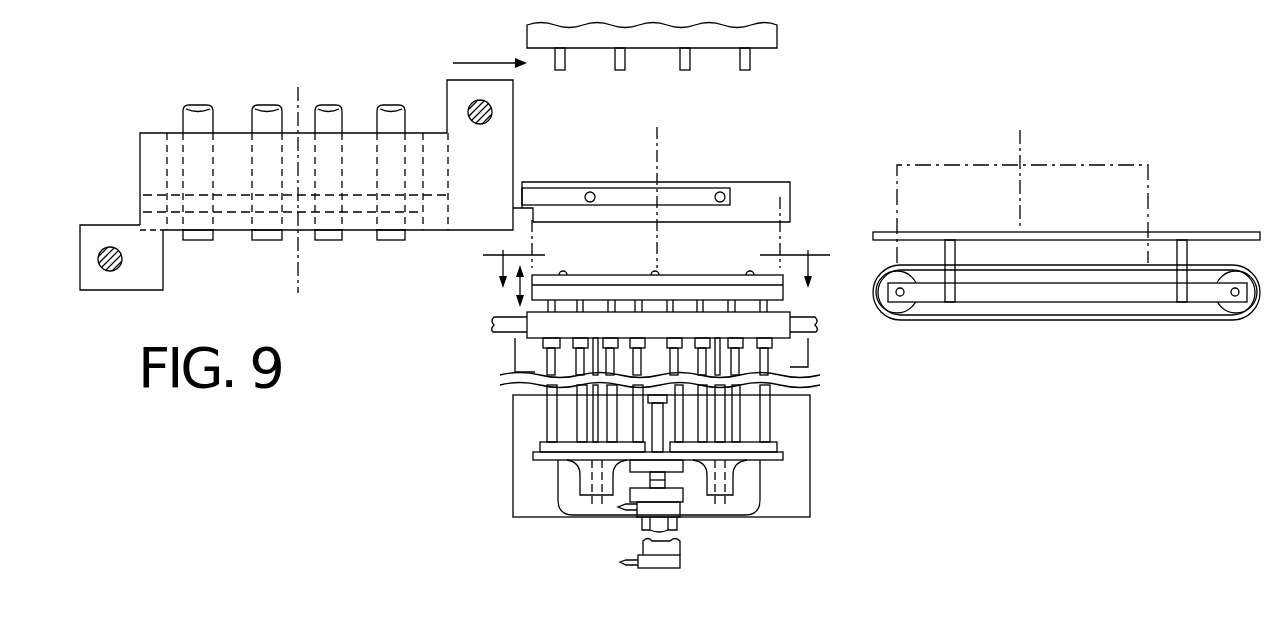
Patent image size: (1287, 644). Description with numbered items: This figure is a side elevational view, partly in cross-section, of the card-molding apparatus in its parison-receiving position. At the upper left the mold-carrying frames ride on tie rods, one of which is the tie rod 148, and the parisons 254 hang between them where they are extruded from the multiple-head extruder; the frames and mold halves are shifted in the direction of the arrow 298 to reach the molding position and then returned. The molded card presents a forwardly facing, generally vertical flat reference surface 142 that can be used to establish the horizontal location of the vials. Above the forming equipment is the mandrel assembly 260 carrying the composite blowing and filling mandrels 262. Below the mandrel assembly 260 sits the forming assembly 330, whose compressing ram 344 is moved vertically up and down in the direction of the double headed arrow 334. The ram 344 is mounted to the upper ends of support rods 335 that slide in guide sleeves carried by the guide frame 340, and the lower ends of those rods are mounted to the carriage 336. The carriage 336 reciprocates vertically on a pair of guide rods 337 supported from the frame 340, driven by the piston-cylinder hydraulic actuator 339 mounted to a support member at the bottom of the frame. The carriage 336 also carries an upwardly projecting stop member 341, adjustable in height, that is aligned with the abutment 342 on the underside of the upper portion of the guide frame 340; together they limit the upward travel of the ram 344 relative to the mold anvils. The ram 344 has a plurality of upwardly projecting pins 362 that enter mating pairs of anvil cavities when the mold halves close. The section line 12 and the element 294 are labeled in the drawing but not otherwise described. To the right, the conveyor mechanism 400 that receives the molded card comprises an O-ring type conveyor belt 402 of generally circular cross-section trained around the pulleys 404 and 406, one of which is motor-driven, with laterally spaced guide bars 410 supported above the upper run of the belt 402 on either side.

The section line 12- 12 is at (654, 207).
The reference surface 142 is at (98, 258).
The tie rod 148 is at (468, 108).
The parison 254 is at (382, 107).
The mandrel assembly 260 is at (791, 28).
The composite blowing and filling mandrel 262 is at (732, 98).
The transfer arm 294 is at (757, 200).
The arrow 298 is at (488, 63).
The forming assembly 330 is at (805, 345).
The double headed arrow 334 is at (516, 290).
The support rod 335 is at (600, 378).
The carriage 336 is at (512, 457).
The guide rod 337 is at (715, 417).
The hydraulic actuator 339 is at (693, 543).
The guide frame 340 is at (784, 352).
The stop member 341 is at (665, 425).
The abutment 342 is at (655, 340).
The compressing ram 344 is at (791, 287).
The pin 362 is at (750, 273).
The conveyor mechanism 400 is at (1148, 328).
The conveyor belt 402 is at (978, 322).
The pulley 404 is at (897, 308).
The pulley 406 is at (1236, 308).
The guide bar 410 is at (1202, 232).